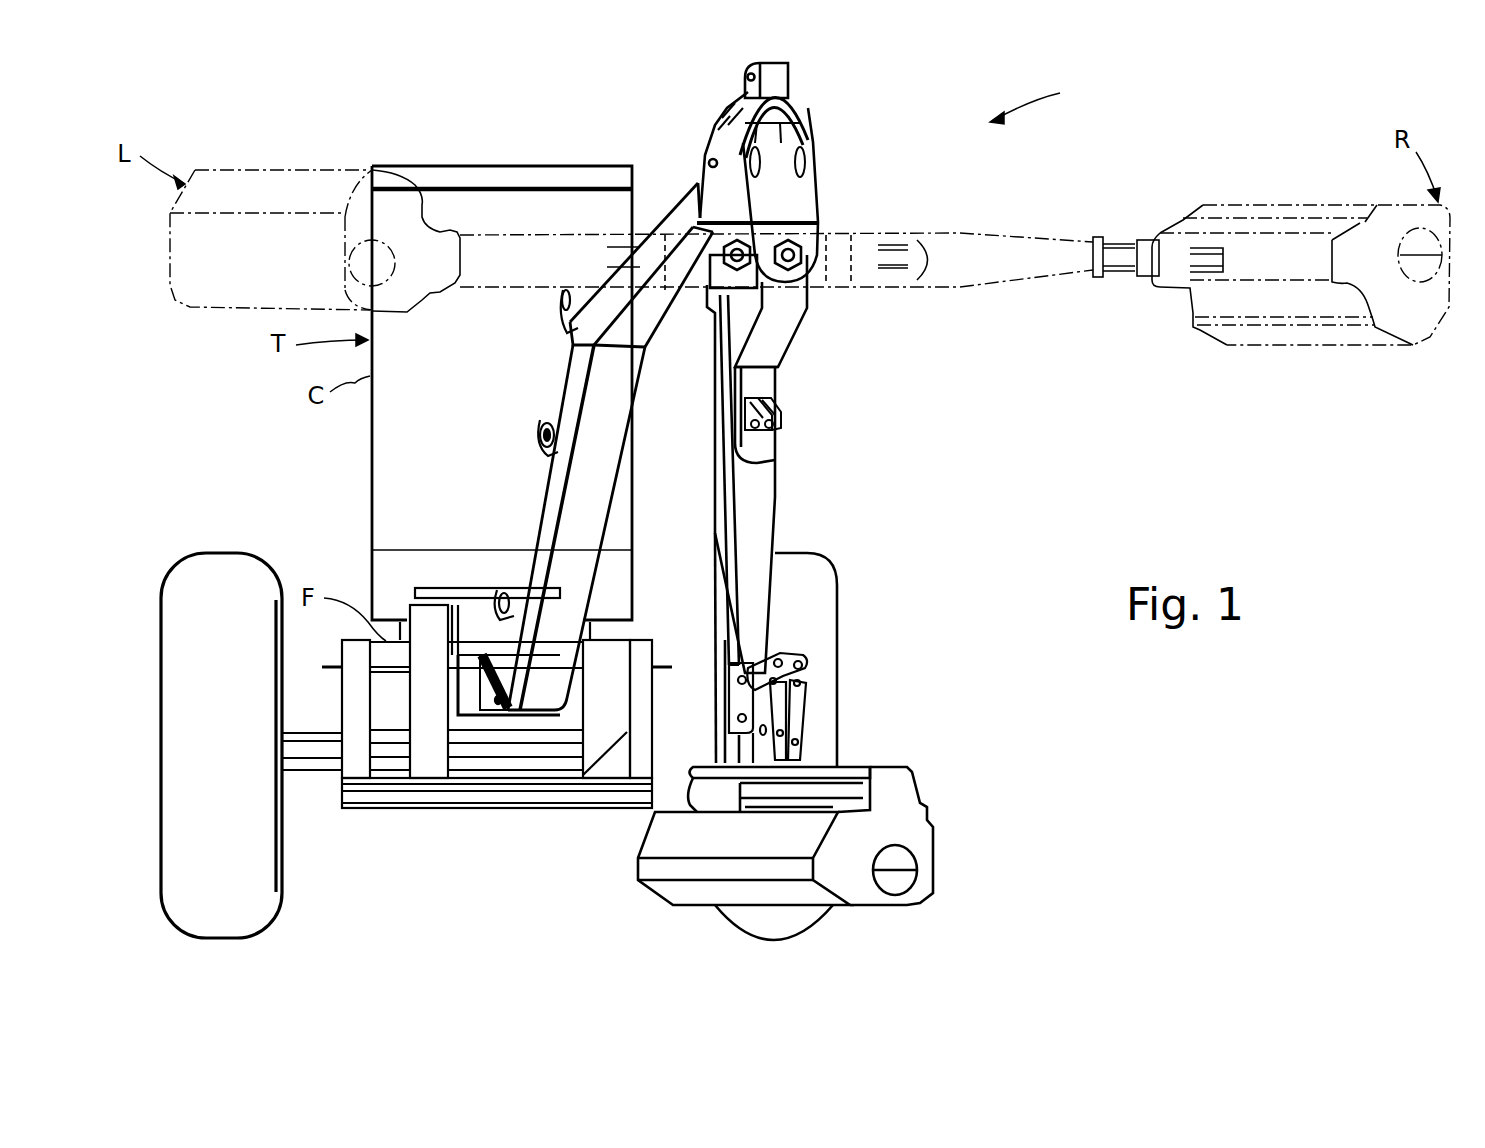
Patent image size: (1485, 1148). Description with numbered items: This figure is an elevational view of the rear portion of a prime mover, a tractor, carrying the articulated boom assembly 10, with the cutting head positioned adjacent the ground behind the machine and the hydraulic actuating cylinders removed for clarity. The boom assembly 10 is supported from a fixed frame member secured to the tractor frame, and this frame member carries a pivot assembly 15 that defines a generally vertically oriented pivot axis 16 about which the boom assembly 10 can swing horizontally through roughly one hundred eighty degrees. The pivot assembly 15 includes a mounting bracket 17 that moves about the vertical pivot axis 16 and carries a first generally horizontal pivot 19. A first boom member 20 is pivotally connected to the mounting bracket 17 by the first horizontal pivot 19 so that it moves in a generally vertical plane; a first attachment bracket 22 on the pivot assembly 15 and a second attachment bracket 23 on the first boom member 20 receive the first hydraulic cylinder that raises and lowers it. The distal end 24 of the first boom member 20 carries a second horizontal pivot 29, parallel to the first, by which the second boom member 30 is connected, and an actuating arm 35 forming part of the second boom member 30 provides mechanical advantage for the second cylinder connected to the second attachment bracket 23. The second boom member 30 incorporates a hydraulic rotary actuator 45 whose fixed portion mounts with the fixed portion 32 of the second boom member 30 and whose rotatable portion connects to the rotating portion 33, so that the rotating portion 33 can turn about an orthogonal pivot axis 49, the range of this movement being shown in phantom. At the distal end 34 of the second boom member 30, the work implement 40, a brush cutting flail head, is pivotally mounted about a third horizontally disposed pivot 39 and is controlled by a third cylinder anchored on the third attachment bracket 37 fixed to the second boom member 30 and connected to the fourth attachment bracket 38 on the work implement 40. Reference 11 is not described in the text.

The articulated boom assembly 10 is at (805, 500).
The frame plate 11 is at (423, 590).
The pivot assembly 15 is at (498, 540).
The pivot axis 16 is at (493, 618).
The mounting bracket 17 is at (487, 685).
The first horizontal pivot 19 is at (490, 701).
The first boom member 20 is at (543, 480).
The first attachment bracket 22 is at (510, 595).
The second attachment bracket 23 is at (543, 417).
The distal end of the first boom member 24 is at (685, 200).
The second horizontal pivot 29 is at (707, 157).
The second boom member 30 is at (810, 250).
The fixed portion of the second boom member 32 is at (813, 135).
The rotating portion of the second boom member 33 is at (527, 230).
The distal end of the second boom member 34 is at (753, 650).
The actuating arm 35 is at (790, 84).
The third attachment bracket 37 is at (780, 415).
The fourth attachment bracket 38 is at (810, 668).
The third horizontally disposed pivot 39 is at (733, 720).
The work implement 40 is at (280, 167).
The hydraulic rotary actuator 45 is at (823, 303).
The orthogonal pivot axis 49 is at (807, 273).